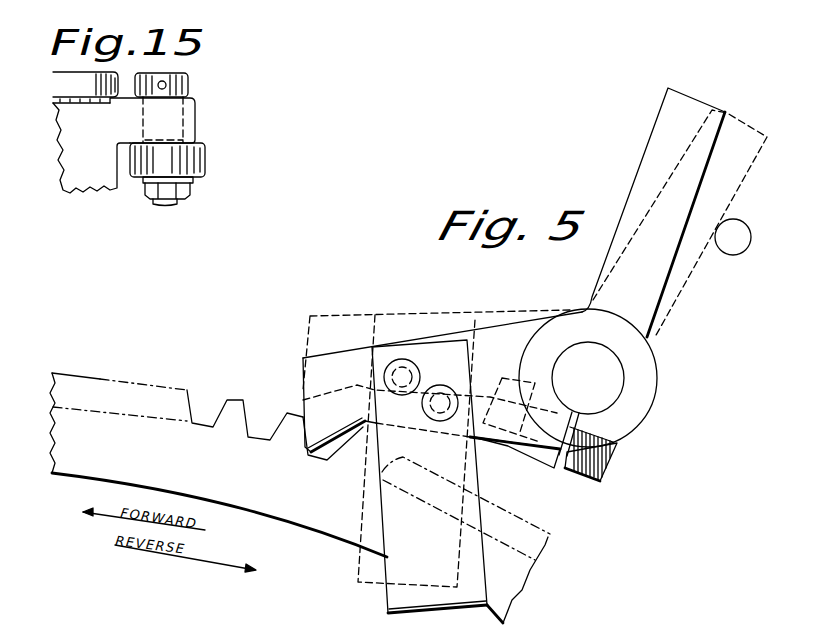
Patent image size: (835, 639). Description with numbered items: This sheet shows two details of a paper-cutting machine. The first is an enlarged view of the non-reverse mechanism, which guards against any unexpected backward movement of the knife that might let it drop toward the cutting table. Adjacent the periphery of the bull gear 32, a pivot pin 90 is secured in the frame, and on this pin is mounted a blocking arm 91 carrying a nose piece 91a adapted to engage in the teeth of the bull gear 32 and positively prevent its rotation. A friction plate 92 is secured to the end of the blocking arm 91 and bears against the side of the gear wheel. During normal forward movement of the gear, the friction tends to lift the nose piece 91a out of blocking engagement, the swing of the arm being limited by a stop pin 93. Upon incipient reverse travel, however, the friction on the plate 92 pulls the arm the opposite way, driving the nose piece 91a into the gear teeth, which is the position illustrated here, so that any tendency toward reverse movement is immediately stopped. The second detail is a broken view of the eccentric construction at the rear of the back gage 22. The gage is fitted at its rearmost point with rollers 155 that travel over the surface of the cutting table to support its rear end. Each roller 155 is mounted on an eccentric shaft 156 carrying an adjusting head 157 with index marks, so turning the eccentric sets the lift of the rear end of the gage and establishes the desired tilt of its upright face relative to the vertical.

In FIG. 15, the back gage 22 is at (67, 130).
In FIG. 15, the roller 155 is at (204, 166).
In FIG. 15, the eccentric shaft 156 is at (190, 128).
In FIG. 15, the adjusting head 157 is at (188, 86).
In FIG. 5, the bull gear 32 is at (225, 403).
In FIG. 5, the pivot pin 90 is at (617, 375).
In FIG. 5, the blocking arm 91 is at (493, 335).
In FIG. 5, the nose piece 91a is at (318, 440).
In FIG. 5, the friction plate 92 is at (388, 498).
In FIG. 5, the stop pin 93 is at (738, 230).